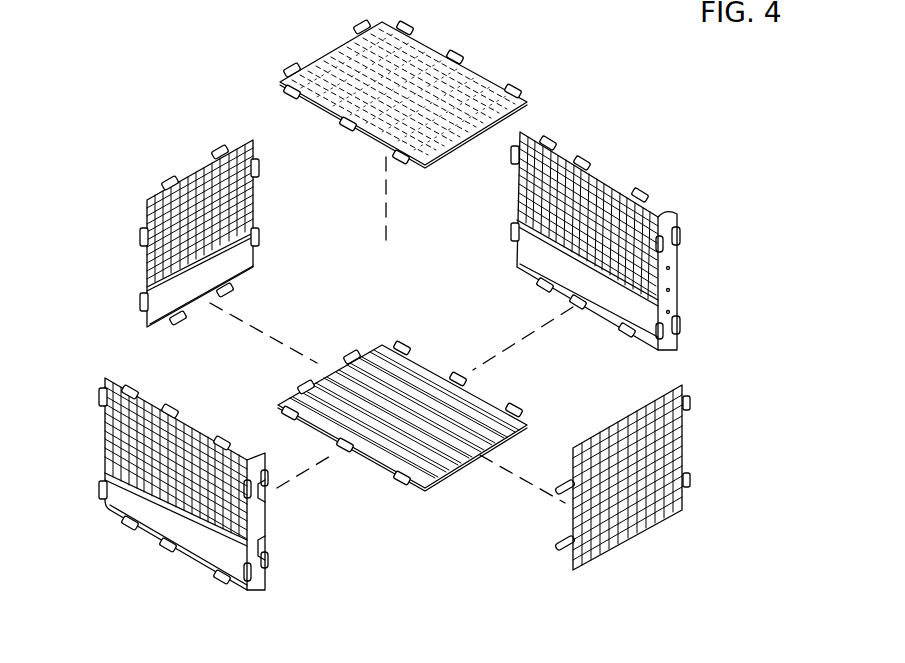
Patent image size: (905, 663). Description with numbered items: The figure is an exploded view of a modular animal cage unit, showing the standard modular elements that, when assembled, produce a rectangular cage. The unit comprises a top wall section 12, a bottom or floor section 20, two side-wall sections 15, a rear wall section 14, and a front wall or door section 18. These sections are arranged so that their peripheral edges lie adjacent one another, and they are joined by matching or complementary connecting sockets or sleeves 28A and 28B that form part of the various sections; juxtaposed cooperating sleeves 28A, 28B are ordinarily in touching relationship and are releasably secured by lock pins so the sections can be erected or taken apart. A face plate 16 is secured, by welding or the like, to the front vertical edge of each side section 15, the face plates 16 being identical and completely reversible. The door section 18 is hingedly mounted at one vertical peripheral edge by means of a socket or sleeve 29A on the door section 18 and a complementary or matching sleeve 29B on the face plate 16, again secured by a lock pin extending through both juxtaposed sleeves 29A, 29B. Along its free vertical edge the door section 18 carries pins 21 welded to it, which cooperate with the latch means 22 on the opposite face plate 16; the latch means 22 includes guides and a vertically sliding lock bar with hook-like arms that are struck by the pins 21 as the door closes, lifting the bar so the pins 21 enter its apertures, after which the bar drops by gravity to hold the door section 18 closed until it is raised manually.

The top wall section 12 is at (406, 95).
The rear wall section 14 is at (156, 233).
The side-wall section 15 is at (657, 188).
The face plate 16 is at (680, 217).
The door section 18 is at (627, 487).
The floor section 20 is at (402, 441).
The pin 21 is at (568, 545).
The latch means 22 is at (296, 520).
The connecting sleeve 28A is at (177, 178).
The connecting sleeve 28B is at (298, 63).
The hinge sleeve 29A is at (690, 407).
The hinge sleeve 29B is at (682, 322).